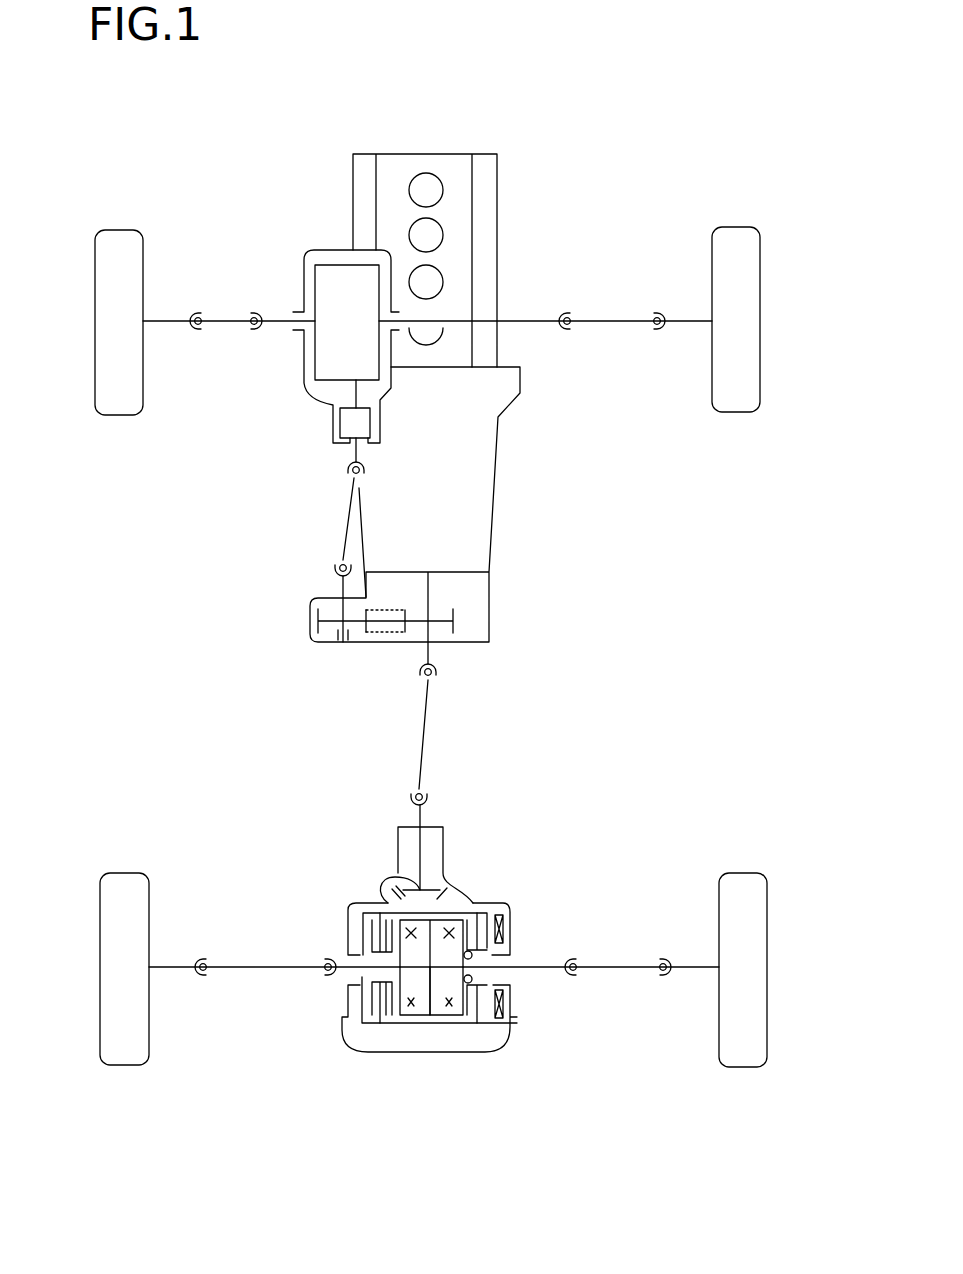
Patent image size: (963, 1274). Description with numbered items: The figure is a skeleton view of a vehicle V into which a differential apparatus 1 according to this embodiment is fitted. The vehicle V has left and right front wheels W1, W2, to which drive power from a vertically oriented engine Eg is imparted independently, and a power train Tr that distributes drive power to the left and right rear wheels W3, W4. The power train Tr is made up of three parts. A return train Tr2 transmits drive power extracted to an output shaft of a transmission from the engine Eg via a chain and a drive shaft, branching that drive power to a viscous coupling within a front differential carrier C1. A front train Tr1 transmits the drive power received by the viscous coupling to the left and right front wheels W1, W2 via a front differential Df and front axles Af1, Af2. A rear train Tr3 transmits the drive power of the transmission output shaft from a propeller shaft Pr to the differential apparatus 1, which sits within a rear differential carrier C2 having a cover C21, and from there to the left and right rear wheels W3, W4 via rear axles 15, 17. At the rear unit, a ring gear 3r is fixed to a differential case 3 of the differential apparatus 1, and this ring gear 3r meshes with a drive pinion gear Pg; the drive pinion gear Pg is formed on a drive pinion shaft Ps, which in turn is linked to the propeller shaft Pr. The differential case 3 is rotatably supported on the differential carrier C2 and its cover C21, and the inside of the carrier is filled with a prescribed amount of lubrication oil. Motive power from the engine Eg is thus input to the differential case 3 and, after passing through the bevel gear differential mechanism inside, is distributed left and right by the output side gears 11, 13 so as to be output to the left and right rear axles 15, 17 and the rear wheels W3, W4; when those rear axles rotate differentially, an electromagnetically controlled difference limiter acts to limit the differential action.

The engine Eg is at (353, 172).
The front train Tr1 is at (340, 222).
The front axle Af1 is at (278, 318).
The front axle Af2 is at (545, 318).
The front wheel W1 is at (95, 326).
The front wheel W2 is at (762, 283).
The rear wheel W3 is at (100, 958).
The rear wheel W4 is at (768, 955).
The front differential Df is at (315, 362).
The front differential carrier C1 is at (330, 398).
The vehicle V is at (575, 273).
The return train Tr2 is at (348, 525).
The power train Tr is at (500, 606).
The propeller shaft Pr is at (425, 712).
The rear train Tr3 is at (508, 825).
The differential apparatus 1 is at (512, 895).
The differential case 3 is at (460, 898).
The differential carrier C2 is at (396, 855).
The drive pinion shaft Ps is at (398, 842).
The drive pinion gear Pg is at (394, 873).
The ring gear 3r is at (373, 908).
The rear axle 15 is at (347, 957).
The rear axle 17 is at (540, 967).
The output side gear 11 is at (409, 968).
The output side gear 13 is at (447, 968).
The cover C21 is at (476, 1053).